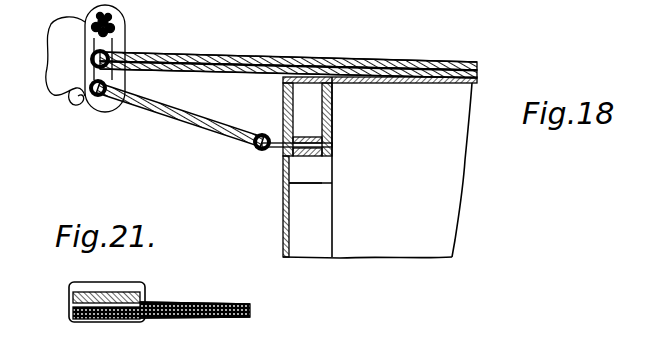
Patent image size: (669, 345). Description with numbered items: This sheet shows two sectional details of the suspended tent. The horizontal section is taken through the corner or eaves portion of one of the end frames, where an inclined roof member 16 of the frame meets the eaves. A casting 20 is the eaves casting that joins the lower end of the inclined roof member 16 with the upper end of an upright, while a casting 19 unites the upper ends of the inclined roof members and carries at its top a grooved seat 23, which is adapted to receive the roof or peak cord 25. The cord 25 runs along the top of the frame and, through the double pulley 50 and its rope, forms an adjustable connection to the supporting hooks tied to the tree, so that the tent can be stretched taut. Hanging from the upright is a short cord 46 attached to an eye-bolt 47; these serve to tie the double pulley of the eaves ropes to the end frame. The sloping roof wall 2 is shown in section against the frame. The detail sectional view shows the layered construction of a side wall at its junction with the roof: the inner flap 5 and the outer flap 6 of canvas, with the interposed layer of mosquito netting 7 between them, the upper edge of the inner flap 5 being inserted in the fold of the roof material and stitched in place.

In FIG. 18, the sloping roof wall 2 is at (452, 190).
In FIG. 21, the inner flap 5 is at (178, 305).
In FIG. 21, the outer flap 6 is at (250, 308).
In FIG. 21, the layer of mosquito netting 7 is at (250, 314).
In FIG. 18, the inclined roof member 16 is at (318, 211).
In FIG. 18, the casting 19 is at (303, 157).
In FIG. 21, the casting 20 is at (128, 292).
In FIG. 18, the grooved seat 23 is at (380, 167).
In FIG. 18, the roof or peak cord 25 is at (246, 58).
In FIG. 18, the short cord 46 is at (181, 117).
In FIG. 18, the eye-bolt 47 is at (268, 152).
In FIG. 18, the double pulley 50 is at (85, 68).